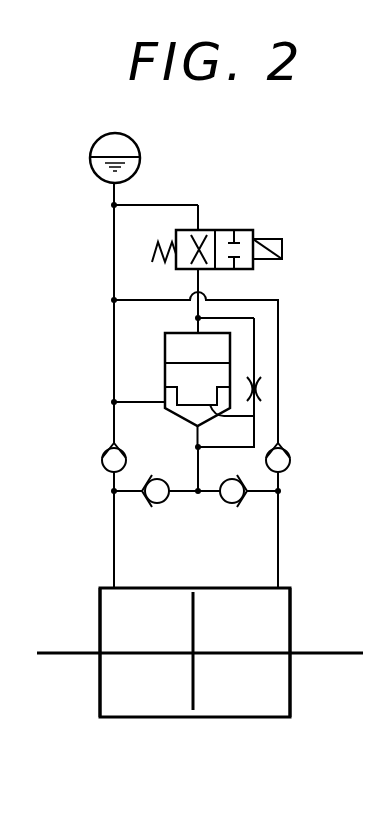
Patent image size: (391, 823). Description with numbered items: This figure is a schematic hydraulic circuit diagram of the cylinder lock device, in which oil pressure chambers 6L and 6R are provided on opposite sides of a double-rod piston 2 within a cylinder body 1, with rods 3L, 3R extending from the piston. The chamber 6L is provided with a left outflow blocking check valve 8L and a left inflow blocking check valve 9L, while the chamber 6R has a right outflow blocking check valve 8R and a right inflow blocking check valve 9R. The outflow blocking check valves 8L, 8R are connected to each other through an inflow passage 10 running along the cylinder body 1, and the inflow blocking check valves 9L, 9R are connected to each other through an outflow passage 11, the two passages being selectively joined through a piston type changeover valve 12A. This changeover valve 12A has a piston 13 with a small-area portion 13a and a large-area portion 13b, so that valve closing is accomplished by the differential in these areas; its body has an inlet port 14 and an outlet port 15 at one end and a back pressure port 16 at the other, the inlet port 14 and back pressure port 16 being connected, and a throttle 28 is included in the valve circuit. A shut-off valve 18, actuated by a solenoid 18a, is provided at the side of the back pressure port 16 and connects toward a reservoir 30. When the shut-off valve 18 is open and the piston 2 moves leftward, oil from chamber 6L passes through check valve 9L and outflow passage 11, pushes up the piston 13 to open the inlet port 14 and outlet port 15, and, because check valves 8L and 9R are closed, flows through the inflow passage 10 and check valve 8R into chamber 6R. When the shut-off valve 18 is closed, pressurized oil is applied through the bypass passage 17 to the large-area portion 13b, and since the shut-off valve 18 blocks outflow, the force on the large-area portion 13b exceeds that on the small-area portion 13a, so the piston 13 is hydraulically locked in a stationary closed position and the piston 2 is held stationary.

The cylinder body 1 is at (255, 717).
The piston 2 is at (193, 678).
The left axle 3L is at (57, 650).
The right axle 3R is at (357, 650).
The left oil pressure chamber 6L is at (107, 690).
The right oil pressure chamber 6R is at (280, 693).
The left outflow blocking check valve 8L is at (100, 454).
The right outflow blocking check valve 8R is at (292, 446).
The left inflow blocking check valve 9L is at (143, 498).
The right inflow blocking check valve 9R is at (242, 507).
The inflow passage 10 is at (280, 330).
The outflow passage 11 is at (207, 459).
The piston type changeover valve 12A is at (230, 353).
The piston 13 is at (160, 373).
The small-area portion 13a is at (257, 417).
The large-area portion 13b is at (182, 361).
The inlet port 14 is at (192, 425).
The outlet port 15 is at (161, 400).
The back pressure port 16 is at (194, 331).
The bypass passage 17 is at (262, 326).
The shut-off valve 18 is at (226, 230).
The solenoid 18a is at (284, 249).
The throttle 28 is at (258, 394).
The reservoir 30 is at (140, 147).